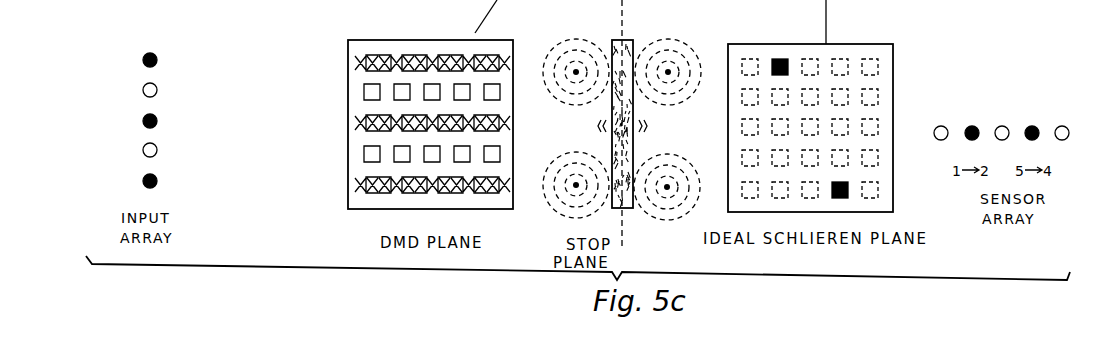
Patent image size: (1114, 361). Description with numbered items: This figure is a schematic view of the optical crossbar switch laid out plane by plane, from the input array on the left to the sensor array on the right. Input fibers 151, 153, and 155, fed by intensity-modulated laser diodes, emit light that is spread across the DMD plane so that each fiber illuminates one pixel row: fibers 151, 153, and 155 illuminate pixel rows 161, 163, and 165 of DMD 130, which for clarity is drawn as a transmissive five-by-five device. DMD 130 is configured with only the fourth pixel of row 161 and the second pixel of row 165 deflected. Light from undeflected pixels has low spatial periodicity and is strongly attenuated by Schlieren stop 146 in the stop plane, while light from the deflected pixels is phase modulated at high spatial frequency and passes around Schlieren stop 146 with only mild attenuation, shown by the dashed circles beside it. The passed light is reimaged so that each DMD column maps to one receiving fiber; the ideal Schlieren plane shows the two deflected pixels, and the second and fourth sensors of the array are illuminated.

The DMD 130 is at (372, 104).
The Schlieren stop 146 is at (633, 42).
The fiber 151 is at (142, 64).
The fiber 153 is at (141, 121).
The fiber 155 is at (142, 181).
The pixel row 161 is at (338, 191).
The pixel row 163 is at (338, 129).
The pixel row 165 is at (338, 69).